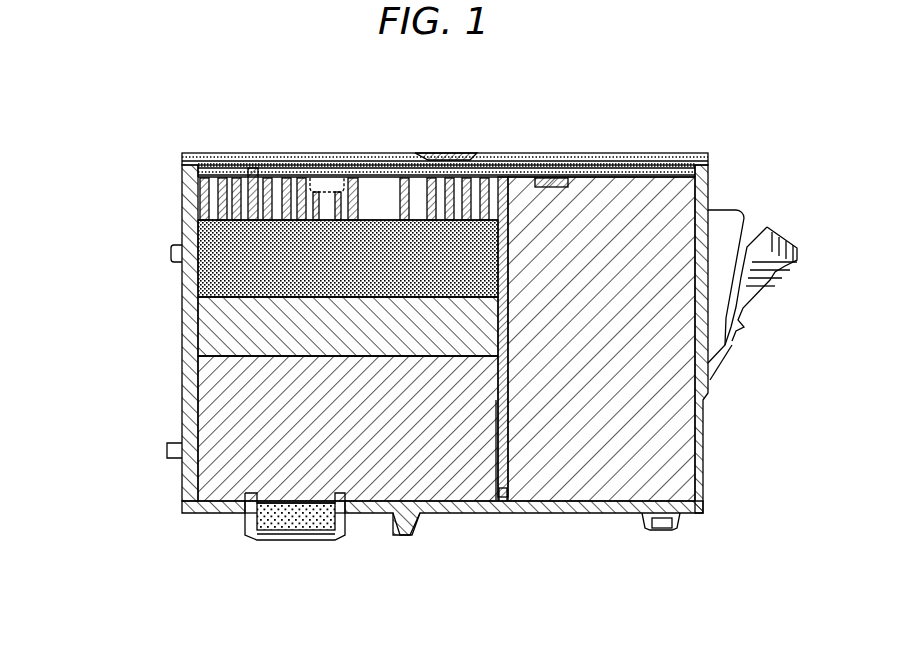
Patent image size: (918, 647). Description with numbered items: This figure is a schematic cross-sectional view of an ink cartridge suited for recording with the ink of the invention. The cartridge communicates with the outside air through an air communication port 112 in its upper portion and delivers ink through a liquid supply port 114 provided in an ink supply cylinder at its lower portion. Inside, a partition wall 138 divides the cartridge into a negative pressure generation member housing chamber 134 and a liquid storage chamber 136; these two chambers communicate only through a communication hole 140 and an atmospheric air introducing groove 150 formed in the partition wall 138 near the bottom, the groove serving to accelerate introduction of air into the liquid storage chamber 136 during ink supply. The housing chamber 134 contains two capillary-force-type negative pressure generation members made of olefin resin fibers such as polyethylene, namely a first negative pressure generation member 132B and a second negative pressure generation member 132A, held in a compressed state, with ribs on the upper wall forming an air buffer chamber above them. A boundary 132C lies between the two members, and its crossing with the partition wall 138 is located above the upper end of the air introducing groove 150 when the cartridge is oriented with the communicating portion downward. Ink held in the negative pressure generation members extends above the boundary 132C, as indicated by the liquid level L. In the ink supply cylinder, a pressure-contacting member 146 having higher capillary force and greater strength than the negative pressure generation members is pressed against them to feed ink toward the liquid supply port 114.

The air communication port 112 is at (443, 158).
The liquid supply port 114 is at (245, 518).
The second negative pressure generation member 132A is at (220, 240).
The first negative pressure generation member 132B is at (222, 392).
The boundary 132C is at (227, 355).
The negative pressure generation member housing chamber 134 is at (228, 325).
The liquid storage chamber 136 is at (668, 452).
The partition wall 138 is at (504, 180).
The communication hole 140 is at (505, 497).
The pressure-contacting member 146 is at (308, 517).
The atmospheric air introducing groove 150 is at (495, 470).
The liquid level L is at (222, 290).